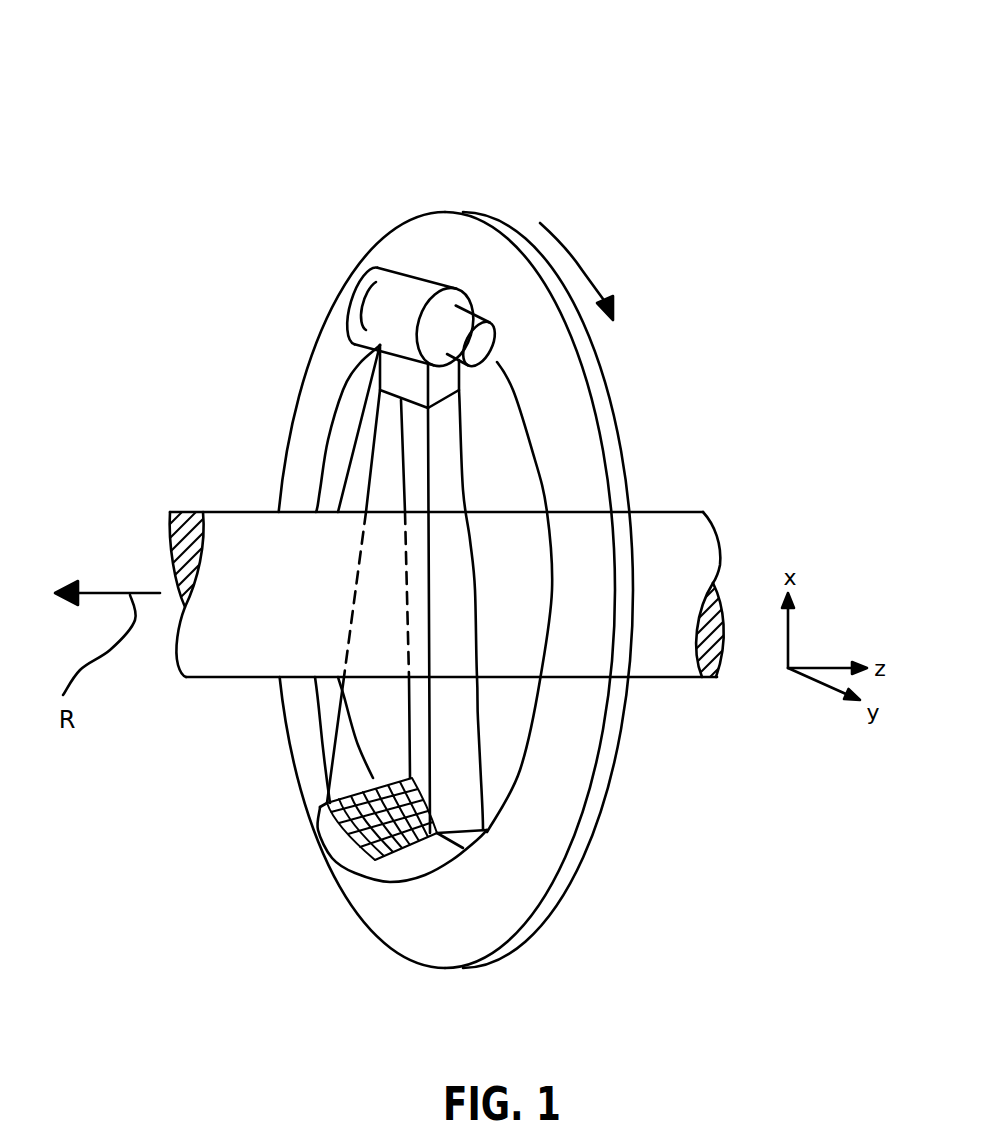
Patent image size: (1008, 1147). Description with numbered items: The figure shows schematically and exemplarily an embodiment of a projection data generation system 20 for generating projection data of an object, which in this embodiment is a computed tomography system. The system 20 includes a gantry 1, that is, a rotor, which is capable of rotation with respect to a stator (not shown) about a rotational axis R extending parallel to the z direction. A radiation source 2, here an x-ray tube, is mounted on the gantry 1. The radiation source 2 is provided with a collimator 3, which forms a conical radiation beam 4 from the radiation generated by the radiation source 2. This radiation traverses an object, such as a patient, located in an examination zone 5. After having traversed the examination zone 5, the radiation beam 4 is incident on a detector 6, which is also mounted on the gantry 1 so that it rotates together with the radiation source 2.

The projection data generation system 20 is at (497, 143).
The gantry 1 is at (527, 855).
The radiation source 2 is at (405, 297).
The collimator 3 is at (445, 380).
The radiation beam 4 is at (430, 753).
The examination zone 5 is at (235, 510).
The detector 6 is at (370, 868).